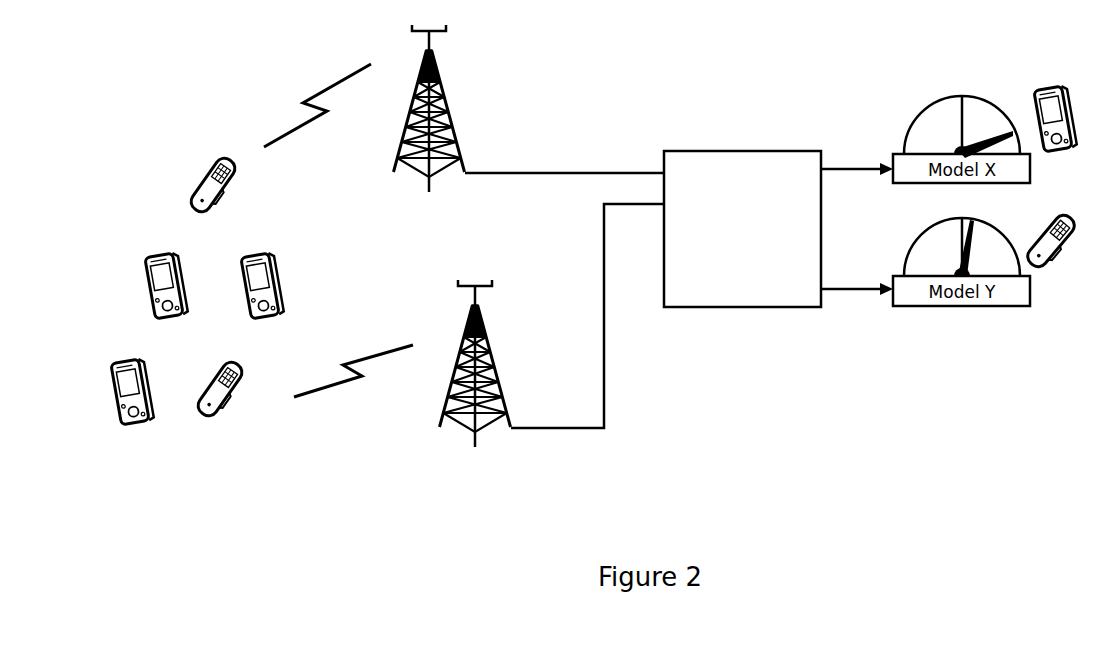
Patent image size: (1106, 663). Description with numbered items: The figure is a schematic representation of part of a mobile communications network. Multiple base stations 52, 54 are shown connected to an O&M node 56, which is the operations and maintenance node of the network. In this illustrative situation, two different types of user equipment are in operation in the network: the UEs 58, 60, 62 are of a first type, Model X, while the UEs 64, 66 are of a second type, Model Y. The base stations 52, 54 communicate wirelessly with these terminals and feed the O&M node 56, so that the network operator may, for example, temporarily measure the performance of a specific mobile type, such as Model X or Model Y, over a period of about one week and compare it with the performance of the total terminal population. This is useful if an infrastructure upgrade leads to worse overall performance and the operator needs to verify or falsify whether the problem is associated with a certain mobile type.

The base station 52 is at (439, 79).
The base station 54 is at (486, 337).
The O&M node 56 is at (740, 151).
The UE 58 is at (113, 392).
The UE 60 is at (146, 283).
The UE 62 is at (278, 290).
The UE 64 is at (209, 170).
The UE 66 is at (221, 410).